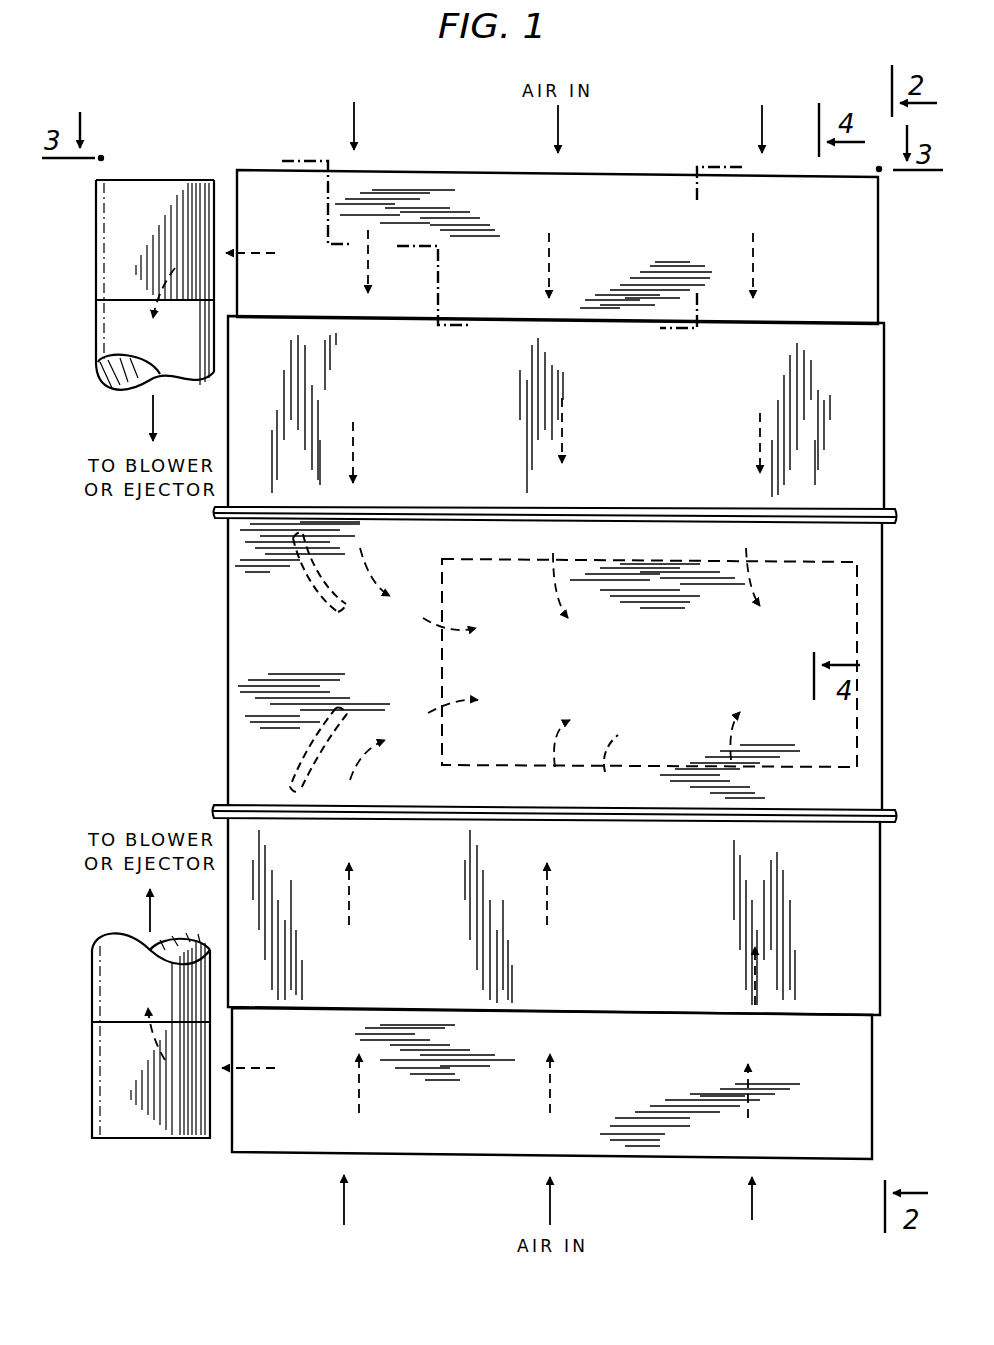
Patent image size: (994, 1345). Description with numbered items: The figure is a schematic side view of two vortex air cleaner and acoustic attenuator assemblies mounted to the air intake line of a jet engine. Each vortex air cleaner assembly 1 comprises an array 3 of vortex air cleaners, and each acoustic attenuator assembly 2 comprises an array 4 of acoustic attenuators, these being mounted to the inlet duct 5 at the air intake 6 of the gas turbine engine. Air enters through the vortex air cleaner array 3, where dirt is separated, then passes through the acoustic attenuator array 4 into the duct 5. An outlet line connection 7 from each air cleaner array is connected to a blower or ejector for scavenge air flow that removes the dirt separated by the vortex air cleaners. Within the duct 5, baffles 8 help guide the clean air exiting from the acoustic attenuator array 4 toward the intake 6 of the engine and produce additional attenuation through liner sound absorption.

The vortex air cleaner assembly 1 is at (895, 252).
The acoustic attenuator assembly 2 is at (896, 398).
The array of vortex air cleaners 3 is at (590, 250).
The array of acoustic attenuators 4 is at (488, 415).
The inlet duct 5 is at (407, 669).
The air intake 6 is at (607, 781).
The outlet line connection 7 is at (118, 240).
The baffle 8 is at (319, 605).